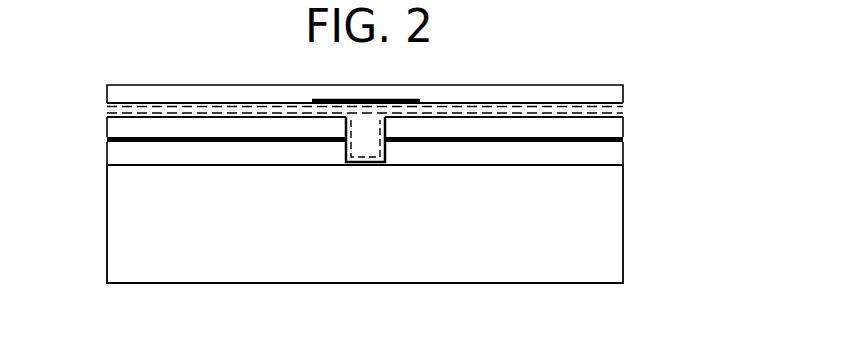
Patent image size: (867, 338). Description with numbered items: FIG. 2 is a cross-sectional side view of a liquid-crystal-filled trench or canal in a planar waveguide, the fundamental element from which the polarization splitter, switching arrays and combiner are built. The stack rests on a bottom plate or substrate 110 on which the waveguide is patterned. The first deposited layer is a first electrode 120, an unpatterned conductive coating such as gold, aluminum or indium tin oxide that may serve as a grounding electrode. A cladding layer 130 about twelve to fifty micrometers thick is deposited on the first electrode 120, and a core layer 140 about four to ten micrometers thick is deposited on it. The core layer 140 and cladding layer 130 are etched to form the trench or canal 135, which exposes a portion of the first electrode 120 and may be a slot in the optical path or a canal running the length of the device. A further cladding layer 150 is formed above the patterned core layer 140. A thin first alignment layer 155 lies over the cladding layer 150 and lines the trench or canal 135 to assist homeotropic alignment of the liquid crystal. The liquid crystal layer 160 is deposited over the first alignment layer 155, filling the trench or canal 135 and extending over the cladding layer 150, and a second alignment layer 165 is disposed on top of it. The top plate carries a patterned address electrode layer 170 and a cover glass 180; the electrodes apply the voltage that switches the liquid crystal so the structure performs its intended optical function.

The bottom plate or substrate 110 is at (608, 217).
The first electrode 120 is at (634, 168).
The cladding layer 130 is at (633, 150).
The trench or canal 135 is at (365, 163).
The core layer 140 is at (100, 142).
The cladding layer 150 is at (621, 130).
The first alignment layer 155 is at (120, 118).
The liquid crystal layer 160 is at (99, 108).
The second alignment layer 165 is at (557, 102).
The address electrode layer 170 is at (359, 90).
The cover glass 180 is at (471, 82).